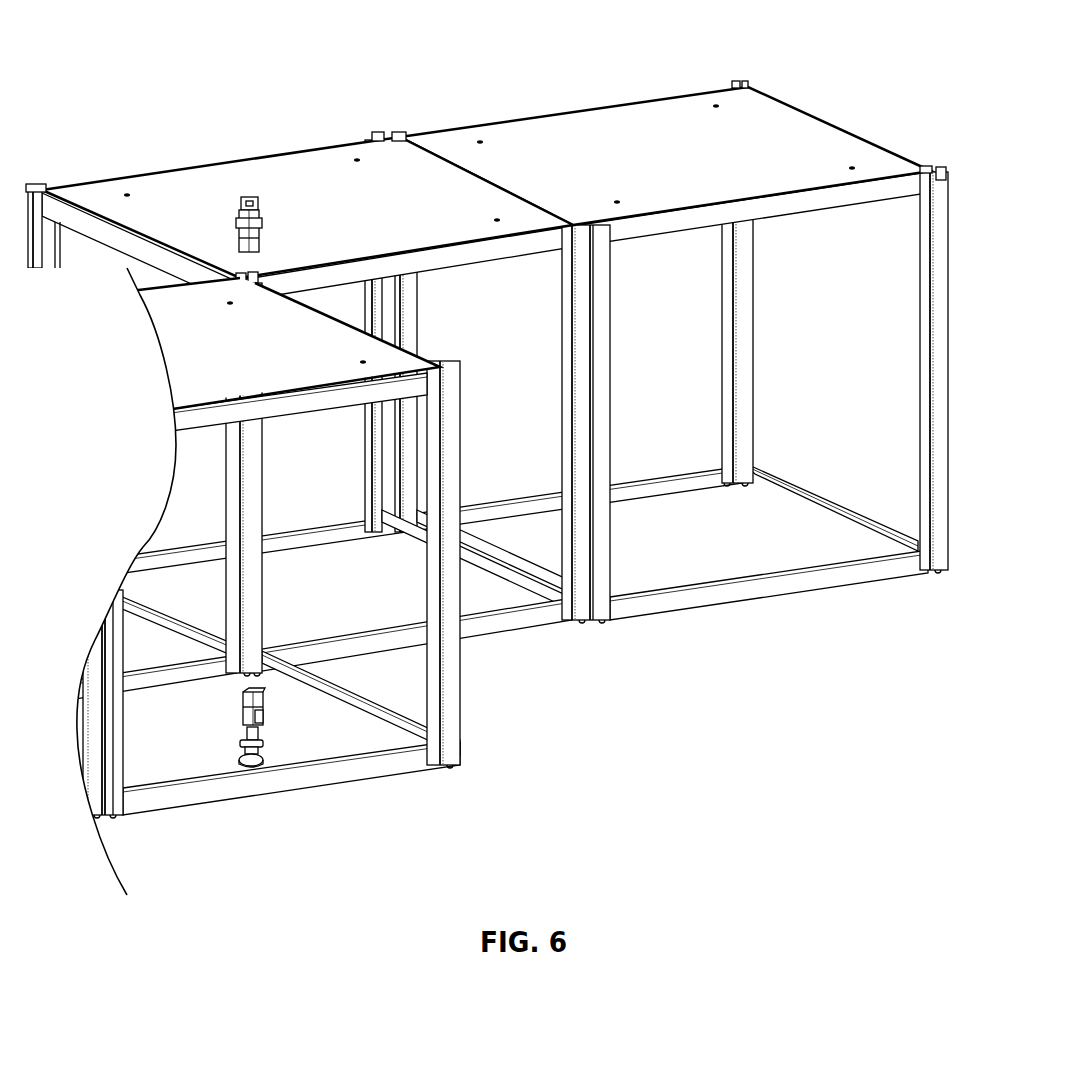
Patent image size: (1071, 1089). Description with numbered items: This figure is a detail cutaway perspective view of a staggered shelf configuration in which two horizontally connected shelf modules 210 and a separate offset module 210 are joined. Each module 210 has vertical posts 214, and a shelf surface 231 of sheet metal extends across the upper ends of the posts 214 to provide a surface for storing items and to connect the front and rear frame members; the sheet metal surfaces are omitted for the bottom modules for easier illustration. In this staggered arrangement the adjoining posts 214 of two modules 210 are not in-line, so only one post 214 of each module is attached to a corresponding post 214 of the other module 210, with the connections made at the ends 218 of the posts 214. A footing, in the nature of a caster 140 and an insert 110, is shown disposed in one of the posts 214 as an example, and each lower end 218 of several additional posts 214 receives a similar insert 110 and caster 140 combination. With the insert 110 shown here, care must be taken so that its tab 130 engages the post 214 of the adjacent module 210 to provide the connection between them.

The module 210 is at (474, 457).
The tab 130 is at (238, 230).
The post 214 is at (257, 558).
The shelf surface 231 is at (276, 362).
The end 218 is at (610, 622).
The insert 110 is at (230, 700).
The caster 140 is at (228, 755).